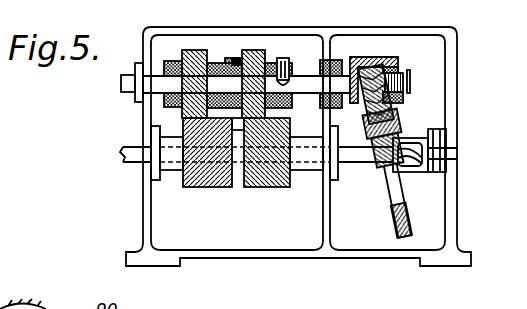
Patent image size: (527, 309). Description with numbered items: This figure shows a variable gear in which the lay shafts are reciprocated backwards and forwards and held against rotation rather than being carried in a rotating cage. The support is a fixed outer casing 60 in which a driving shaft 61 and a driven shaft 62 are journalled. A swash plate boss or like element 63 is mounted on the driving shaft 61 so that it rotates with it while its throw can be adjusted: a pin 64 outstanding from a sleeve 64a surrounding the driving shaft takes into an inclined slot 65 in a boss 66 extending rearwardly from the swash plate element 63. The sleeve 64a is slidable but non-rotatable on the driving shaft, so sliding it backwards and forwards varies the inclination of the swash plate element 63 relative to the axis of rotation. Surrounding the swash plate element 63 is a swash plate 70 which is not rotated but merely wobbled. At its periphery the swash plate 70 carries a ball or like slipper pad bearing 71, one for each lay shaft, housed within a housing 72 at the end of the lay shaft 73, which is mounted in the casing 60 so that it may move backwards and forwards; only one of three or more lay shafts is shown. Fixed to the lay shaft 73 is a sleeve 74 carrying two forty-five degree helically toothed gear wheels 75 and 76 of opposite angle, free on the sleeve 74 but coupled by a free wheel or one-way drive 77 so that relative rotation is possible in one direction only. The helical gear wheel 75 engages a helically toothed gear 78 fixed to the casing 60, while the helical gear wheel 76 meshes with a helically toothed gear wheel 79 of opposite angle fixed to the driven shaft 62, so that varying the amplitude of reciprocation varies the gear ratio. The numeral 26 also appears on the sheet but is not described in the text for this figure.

The numeral fragment 26 is at (9, 122).
The fixed outer casing 60 is at (156, 33).
The driving shaft 61 is at (352, 158).
The driven shaft 62 is at (135, 162).
The swash plate boss or like element 63 is at (383, 167).
The pin 64 is at (446, 140).
The sleeve 64a is at (446, 163).
The inclined slot 65 is at (412, 172).
The boss 66 is at (412, 148).
The swash plate 70 is at (397, 117).
The ball or like slipper pad bearing 71 is at (398, 62).
The housing 72 is at (390, 57).
The lay shaft 73 is at (306, 76).
The sleeve 74 is at (294, 124).
The helically toothed gear wheel 75 is at (198, 50).
The helically toothed gear wheel 76 is at (266, 50).
The free wheel or one-way drive 77 is at (235, 57).
The helically toothed gear 78 is at (210, 188).
The helically toothed gear wheel 79 is at (266, 188).